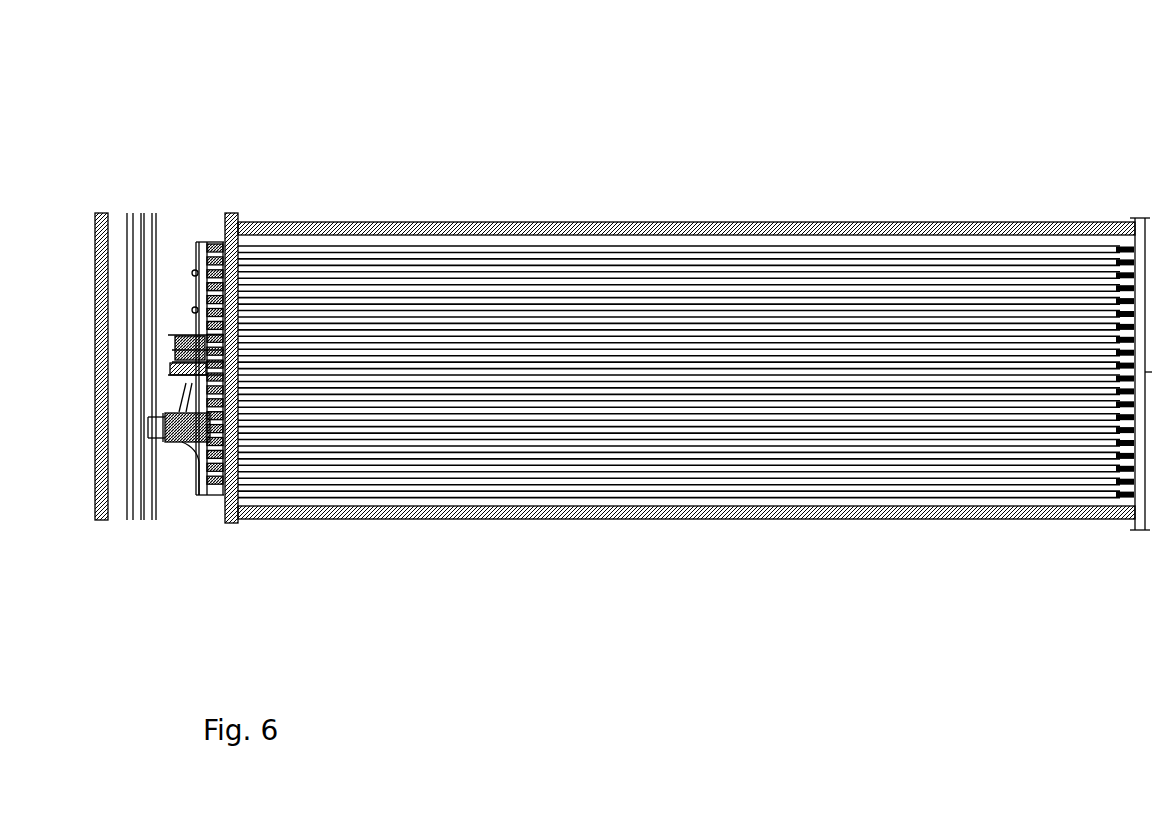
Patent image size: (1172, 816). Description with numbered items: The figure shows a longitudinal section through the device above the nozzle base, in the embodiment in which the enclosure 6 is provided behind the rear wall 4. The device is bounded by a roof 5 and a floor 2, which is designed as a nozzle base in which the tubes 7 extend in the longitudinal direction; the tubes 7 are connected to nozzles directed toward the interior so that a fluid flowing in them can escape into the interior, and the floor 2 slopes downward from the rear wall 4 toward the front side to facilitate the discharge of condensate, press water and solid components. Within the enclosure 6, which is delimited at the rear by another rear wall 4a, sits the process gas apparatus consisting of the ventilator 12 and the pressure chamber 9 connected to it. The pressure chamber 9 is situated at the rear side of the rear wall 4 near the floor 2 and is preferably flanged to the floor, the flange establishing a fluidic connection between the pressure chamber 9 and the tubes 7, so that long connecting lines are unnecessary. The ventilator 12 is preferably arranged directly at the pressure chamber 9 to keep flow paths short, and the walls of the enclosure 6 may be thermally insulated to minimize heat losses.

The floor 2 is at (388, 515).
The rear wall 4 is at (238, 223).
The another rear wall 4a is at (112, 255).
The roof 5 is at (400, 288).
The enclosure 6 is at (229, 215).
The tubes 7 is at (722, 425).
The pressure chamber 9 is at (198, 242).
The ventilator 12 is at (177, 466).